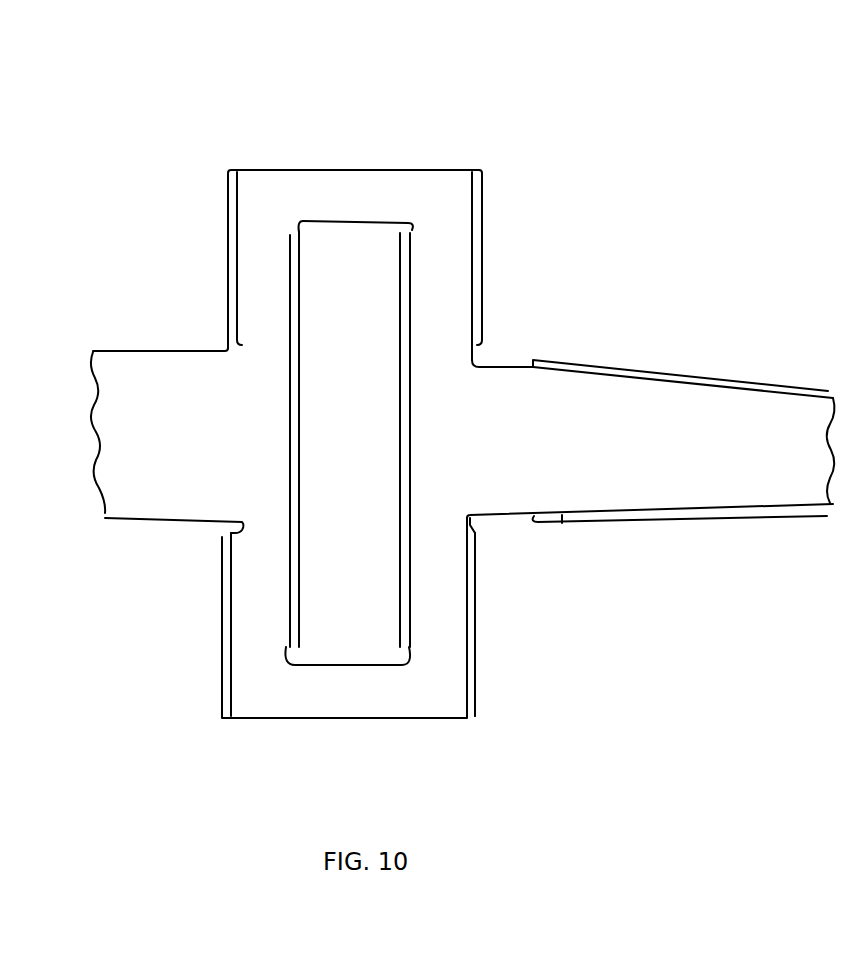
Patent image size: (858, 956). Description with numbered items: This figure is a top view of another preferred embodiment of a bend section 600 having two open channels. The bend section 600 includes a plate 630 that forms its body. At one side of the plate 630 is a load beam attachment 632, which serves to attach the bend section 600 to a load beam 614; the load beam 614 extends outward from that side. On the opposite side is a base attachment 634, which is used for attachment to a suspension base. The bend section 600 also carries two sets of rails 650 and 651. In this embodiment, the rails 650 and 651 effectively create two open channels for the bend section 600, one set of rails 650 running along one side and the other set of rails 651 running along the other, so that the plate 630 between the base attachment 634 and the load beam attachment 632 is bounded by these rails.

The bend section 600 is at (533, 77).
The plate 630 is at (438, 193).
The load beam attachment 632 is at (482, 398).
The base attachment 634 is at (175, 383).
The load beam 614 is at (667, 402).
The rails 650 is at (397, 595).
The rails 651 is at (291, 485).